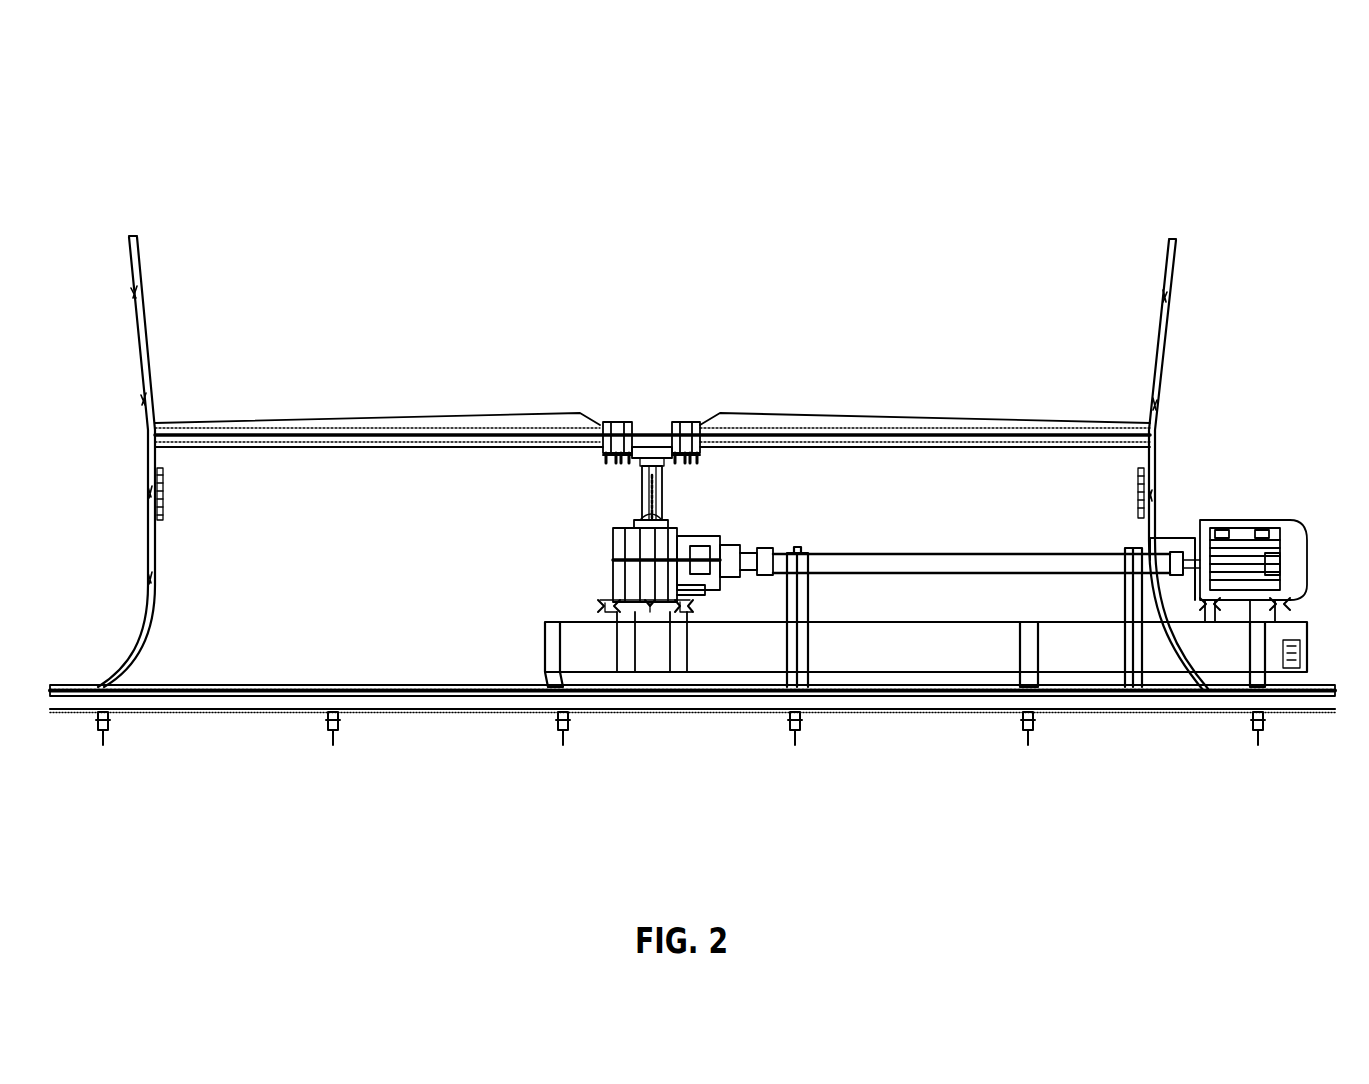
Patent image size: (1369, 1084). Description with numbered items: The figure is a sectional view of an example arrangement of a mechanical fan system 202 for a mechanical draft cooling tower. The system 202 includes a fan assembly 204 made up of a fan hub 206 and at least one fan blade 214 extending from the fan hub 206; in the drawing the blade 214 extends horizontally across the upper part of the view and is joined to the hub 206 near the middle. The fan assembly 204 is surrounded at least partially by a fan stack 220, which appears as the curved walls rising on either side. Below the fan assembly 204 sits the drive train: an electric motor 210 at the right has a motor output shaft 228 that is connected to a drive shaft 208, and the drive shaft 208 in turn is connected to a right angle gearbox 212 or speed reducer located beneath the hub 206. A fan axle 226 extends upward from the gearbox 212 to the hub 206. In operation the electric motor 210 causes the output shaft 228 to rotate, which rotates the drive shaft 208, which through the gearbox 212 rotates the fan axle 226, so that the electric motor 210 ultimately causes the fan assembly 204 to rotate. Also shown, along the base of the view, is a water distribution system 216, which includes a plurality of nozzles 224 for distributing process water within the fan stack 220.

The mechanical fan system 202 is at (188, 120).
The fan assembly 204 is at (546, 316).
The fan hub 206 is at (655, 433).
The drive shaft 208 is at (1045, 572).
The electric motor 210 is at (1270, 522).
The right angle gearbox 212 is at (620, 556).
The fan blade 214 is at (970, 430).
The water distribution system 216 is at (905, 700).
The fan stack 220 is at (1160, 355).
The nozzles 224 is at (330, 724).
The fan axle 226 is at (652, 495).
The motor output shaft 228 is at (1182, 540).